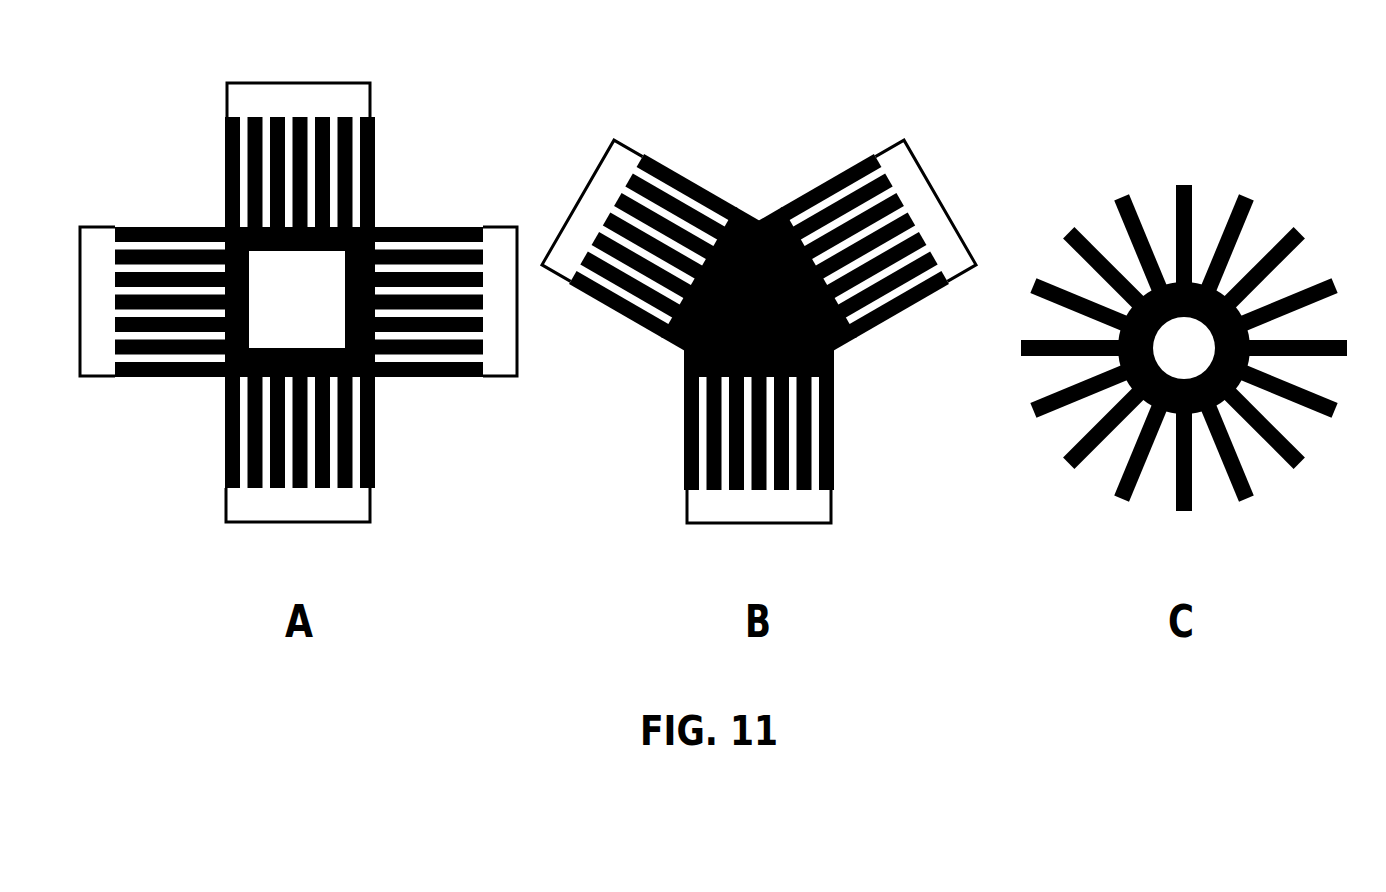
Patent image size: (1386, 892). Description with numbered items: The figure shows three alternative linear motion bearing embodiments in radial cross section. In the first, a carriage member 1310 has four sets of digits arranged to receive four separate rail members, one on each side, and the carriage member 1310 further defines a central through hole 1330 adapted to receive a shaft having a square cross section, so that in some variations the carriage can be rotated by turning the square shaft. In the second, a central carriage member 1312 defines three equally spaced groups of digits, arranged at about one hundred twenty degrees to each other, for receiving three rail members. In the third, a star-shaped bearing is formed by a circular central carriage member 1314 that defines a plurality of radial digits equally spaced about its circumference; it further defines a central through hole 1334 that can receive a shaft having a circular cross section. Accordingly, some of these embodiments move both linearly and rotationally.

In FIG. 11A, the carriage member 1310 is at (373, 223).
In FIG. 11A, the central through hole 1330 is at (323, 316).
In FIG. 11B, the central carriage member 1312 is at (677, 350).
In FIG. 11C, the circular central carriage member 1314 is at (1125, 195).
In FIG. 11C, the central through hole 1334 is at (1175, 350).